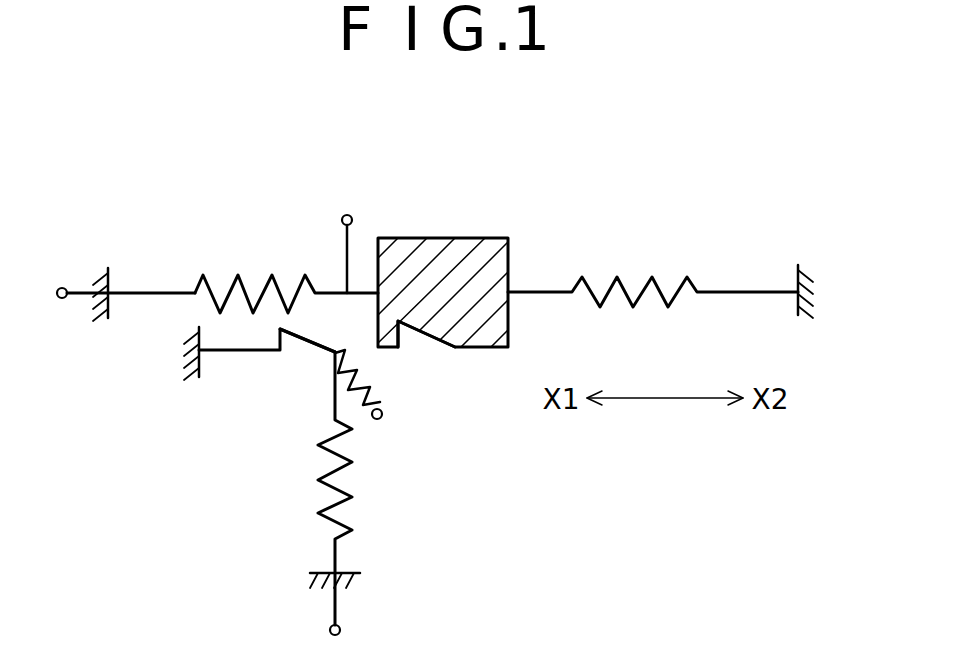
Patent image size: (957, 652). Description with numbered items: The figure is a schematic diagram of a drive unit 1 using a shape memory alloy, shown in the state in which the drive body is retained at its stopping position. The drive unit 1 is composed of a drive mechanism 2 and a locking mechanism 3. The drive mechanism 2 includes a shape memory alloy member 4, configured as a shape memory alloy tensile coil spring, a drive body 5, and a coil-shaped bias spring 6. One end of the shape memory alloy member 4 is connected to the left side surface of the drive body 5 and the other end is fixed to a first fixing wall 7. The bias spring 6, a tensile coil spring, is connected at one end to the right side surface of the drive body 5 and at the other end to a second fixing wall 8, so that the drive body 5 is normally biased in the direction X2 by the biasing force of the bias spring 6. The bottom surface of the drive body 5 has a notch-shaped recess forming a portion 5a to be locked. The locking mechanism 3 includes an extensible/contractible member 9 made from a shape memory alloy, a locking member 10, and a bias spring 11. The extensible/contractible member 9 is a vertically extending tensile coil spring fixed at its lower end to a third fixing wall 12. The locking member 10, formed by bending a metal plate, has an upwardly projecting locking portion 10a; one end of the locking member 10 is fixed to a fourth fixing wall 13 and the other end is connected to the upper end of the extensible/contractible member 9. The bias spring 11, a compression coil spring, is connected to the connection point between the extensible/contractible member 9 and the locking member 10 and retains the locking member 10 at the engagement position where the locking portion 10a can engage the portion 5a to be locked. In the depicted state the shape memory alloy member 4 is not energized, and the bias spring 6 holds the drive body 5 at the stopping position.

The drive unit 1 is at (603, 173).
The drive mechanism 2 is at (320, 194).
The locking mechanism 3 is at (245, 473).
The shape memory alloy member 4 is at (205, 282).
The drive body 5 is at (442, 238).
The portion to be locked 5a is at (404, 332).
The bias spring 6 is at (627, 290).
The first fixing wall 7 is at (110, 303).
The second fixing wall 8 is at (797, 305).
The extensible/contractible member 9 is at (340, 487).
The locking member 10 is at (255, 350).
The locking portion 10a is at (302, 333).
The bias spring 11 is at (383, 411).
The third fixing wall 12 is at (350, 570).
The fourth fixing wall 13 is at (203, 360).